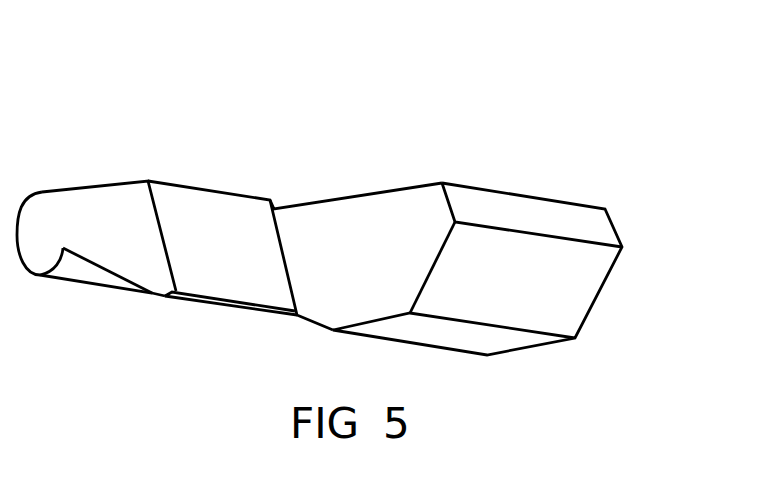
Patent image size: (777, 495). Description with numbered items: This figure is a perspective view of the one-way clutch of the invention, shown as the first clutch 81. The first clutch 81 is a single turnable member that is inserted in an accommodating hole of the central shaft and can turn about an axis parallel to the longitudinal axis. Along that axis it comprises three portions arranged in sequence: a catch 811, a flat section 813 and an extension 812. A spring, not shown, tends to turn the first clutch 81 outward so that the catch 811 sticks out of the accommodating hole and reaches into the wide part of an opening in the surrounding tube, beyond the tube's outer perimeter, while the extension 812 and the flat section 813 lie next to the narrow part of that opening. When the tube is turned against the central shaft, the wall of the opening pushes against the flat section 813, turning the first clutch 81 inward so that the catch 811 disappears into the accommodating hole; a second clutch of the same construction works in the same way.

The first clutch 81 is at (342, 235).
The catch 811 is at (485, 211).
The extension 812 is at (125, 196).
The flat section 813 is at (245, 237).